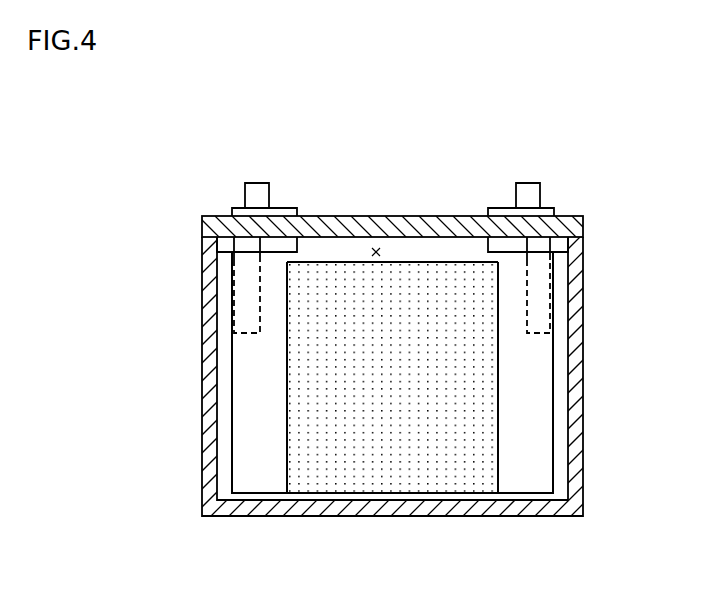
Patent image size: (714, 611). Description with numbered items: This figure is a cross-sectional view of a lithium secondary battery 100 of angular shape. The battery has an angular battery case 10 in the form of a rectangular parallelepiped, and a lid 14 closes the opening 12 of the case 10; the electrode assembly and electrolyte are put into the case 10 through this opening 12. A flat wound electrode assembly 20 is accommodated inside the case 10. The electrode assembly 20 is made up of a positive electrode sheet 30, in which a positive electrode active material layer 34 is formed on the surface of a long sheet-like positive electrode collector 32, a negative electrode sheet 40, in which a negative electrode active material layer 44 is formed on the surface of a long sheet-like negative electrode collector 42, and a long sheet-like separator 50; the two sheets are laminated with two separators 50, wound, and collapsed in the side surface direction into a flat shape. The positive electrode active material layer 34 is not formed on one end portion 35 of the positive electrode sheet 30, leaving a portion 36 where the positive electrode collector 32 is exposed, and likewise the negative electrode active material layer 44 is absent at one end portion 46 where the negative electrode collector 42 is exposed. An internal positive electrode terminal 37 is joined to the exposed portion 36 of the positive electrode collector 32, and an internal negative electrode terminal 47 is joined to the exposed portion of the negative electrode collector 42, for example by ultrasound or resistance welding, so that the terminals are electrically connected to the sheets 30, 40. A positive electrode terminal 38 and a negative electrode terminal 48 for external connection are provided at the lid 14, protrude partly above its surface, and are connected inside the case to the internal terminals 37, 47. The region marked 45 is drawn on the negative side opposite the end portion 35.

The lithium secondary battery 100 is at (173, 106).
The battery case 10 is at (597, 417).
The opening 12 is at (377, 246).
The lid 14 is at (342, 206).
The wound electrode assembly 20 is at (420, 252).
The positive electrode sheet 30 is at (312, 413).
The positive electrode collector 32 is at (258, 481).
The positive electrode active material layer 34 is at (343, 460).
The end portion 35 is at (232, 347).
The portion where the positive electrode active material layer has not been formed 36 is at (250, 455).
The internal positive electrode terminal 37 is at (245, 256).
The positive electrode terminal 38 is at (254, 181).
The negative electrode sheet 40 is at (482, 412).
The negative electrode collector 42 is at (523, 485).
The negative electrode active material layer 44 is at (473, 458).
The positive electrode collector plate 45 is at (553, 350).
The portion where the negative electrode active material layer has not been formed 46 is at (542, 462).
The internal negative electrode terminal 47 is at (545, 256).
The negative electrode terminal 48 is at (530, 190).
The separator 50 is at (405, 478).